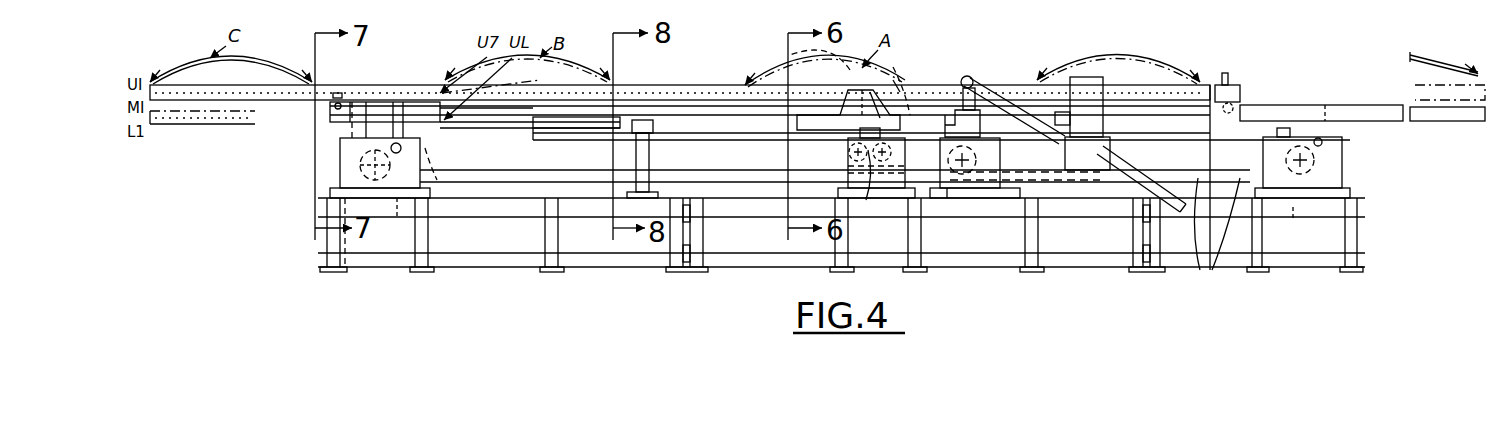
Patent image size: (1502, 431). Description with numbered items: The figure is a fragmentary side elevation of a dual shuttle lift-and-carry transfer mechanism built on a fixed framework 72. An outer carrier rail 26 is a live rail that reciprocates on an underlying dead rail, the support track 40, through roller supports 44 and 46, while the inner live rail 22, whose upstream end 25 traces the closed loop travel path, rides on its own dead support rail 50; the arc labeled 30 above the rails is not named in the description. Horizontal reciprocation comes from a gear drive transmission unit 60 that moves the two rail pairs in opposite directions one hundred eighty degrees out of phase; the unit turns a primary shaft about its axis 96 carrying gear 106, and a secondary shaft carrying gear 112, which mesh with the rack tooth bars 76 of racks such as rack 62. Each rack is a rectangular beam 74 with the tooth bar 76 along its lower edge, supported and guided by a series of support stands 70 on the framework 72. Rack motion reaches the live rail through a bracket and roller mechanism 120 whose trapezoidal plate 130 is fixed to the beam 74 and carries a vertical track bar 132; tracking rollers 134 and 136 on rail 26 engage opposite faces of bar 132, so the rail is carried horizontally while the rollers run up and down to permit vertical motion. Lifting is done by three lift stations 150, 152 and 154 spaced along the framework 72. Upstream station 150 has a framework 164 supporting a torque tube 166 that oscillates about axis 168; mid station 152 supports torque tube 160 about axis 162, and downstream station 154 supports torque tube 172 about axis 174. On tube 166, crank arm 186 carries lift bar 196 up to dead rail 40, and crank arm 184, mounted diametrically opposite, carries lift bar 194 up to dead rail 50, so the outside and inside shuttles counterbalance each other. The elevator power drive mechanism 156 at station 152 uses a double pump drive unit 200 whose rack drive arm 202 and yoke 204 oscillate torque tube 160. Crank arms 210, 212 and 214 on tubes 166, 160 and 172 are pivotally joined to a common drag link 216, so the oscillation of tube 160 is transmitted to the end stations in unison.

The live rail 22 is at (492, 130).
The upstream end of live rail 25 is at (433, 110).
The outer workpiece carrier rail 26 is at (387, 83).
The upper arc path 30 is at (151, 80).
The support track 40 is at (330, 110).
The roller support 44 is at (338, 92).
The roller support 46 is at (1237, 108).
The support rail 50 is at (525, 135).
The gear drive transmission unit 60 is at (847, 158).
The rack 62 is at (663, 113).
The support stand 70 is at (650, 158).
The transfer mechanism framework 72 is at (323, 248).
The rectangular beam 74 is at (690, 122).
The rack tooth bar 76 is at (726, 140).
The rotational axis 96 is at (866, 200).
The gear 106 is at (855, 160).
The gear 112 is at (912, 115).
The bracket and roller mechanism 120 is at (898, 82).
The trapezoidal plate 130 is at (868, 100).
The track bar 132 is at (795, 62).
The tracking roller 134 is at (850, 70).
The tracking roller 136 is at (893, 67).
The upstream end lift station 150 is at (333, 167).
The mid lift station 152 is at (982, 198).
The downstream end lift station 154 is at (1347, 162).
The elevator power drive mechanism 156 is at (1113, 62).
The torque tube type drive shaft 160 is at (985, 150).
The rotational axis 162 is at (950, 182).
The framework 164 is at (337, 155).
The torque tube type drive shaft 166 is at (378, 130).
The rotational axis 168 is at (345, 195).
The torque tube type drive shaft 172 is at (1333, 103).
The rotational axis 174 is at (1298, 227).
The crank arm 184 is at (360, 178).
The crank arm 186 is at (437, 180).
The lift bar 194 is at (322, 142).
The lift bar 196 is at (410, 112).
The electro-mechanical double pump drive unit 200 is at (1108, 155).
The rack drive arm 202 is at (1027, 100).
The yoke 204 is at (968, 103).
The crank arm 210 is at (397, 203).
The crank arm 212 is at (978, 197).
The crank arm 214 is at (1320, 168).
The drag link 216 is at (533, 180).